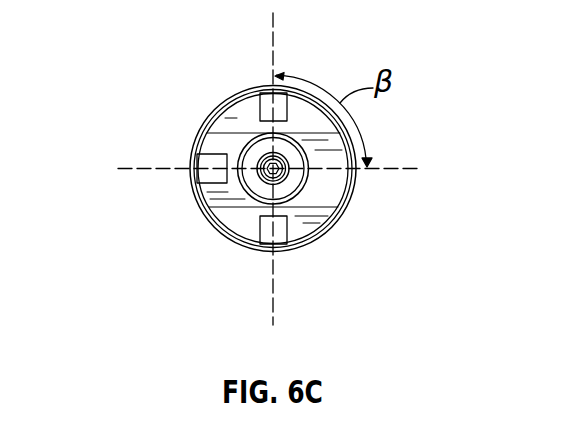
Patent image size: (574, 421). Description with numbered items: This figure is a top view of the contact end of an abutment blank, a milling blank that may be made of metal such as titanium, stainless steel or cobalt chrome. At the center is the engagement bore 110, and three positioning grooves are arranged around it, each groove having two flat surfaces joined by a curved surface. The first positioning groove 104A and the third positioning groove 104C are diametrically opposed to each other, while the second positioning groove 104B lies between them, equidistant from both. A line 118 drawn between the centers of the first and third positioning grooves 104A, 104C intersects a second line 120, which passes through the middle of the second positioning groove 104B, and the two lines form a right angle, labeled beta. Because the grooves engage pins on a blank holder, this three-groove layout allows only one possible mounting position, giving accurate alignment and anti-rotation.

The first positioning groove 104A is at (264, 243).
The second positioning groove 104B is at (193, 163).
The third positioning groove 104C is at (267, 97).
The engagement bore 110 is at (285, 190).
The line 118 is at (274, 40).
The longitudinal axis 120 is at (122, 171).